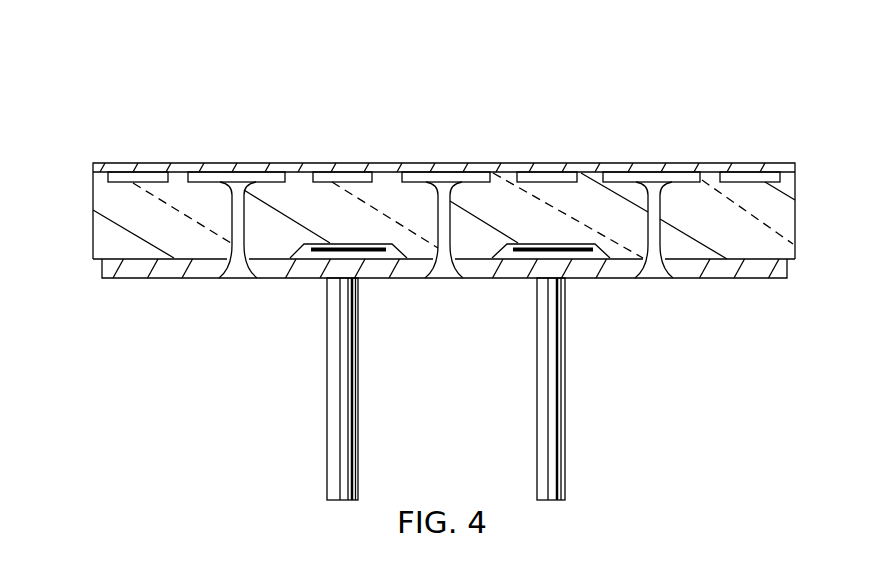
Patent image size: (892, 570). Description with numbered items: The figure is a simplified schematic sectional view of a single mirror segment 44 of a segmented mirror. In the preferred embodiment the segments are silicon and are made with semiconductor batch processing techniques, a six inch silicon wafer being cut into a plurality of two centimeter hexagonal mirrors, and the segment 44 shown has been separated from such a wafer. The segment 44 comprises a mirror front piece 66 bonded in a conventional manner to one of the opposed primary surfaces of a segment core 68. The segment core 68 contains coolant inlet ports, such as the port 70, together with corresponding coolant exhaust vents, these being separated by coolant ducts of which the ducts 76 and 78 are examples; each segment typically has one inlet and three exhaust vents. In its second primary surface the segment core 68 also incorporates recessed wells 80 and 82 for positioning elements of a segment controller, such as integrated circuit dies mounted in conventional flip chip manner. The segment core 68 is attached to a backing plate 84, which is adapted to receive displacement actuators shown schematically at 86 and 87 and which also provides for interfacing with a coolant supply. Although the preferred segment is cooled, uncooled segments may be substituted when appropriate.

The mirror segment 44 is at (403, 86).
The segment core 68 is at (93, 224).
The mirror front piece 66 is at (334, 172).
The coolant inlet port 70 is at (237, 192).
The coolant duct 76 is at (736, 178).
The coolant duct 78 is at (538, 173).
The recessed well 80 is at (378, 254).
The recessed well 82 is at (517, 254).
The backing plate 84 is at (140, 279).
The displacement actuator 86 is at (358, 407).
The displacement actuator 87 is at (563, 410).